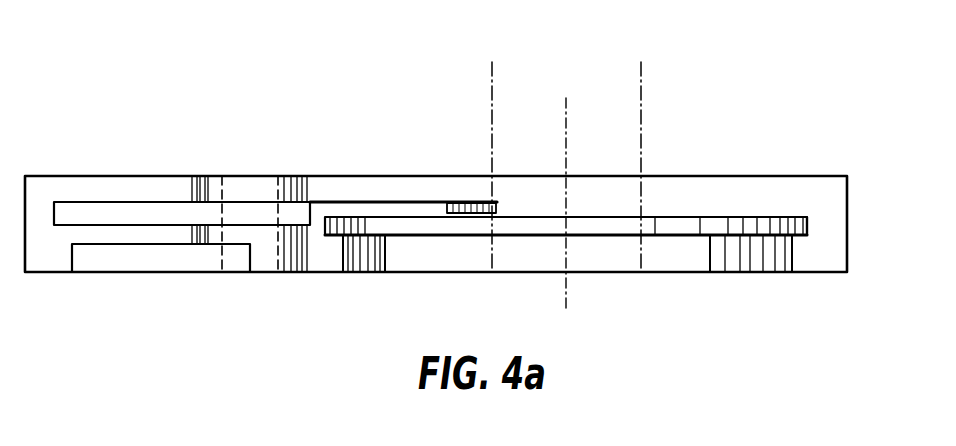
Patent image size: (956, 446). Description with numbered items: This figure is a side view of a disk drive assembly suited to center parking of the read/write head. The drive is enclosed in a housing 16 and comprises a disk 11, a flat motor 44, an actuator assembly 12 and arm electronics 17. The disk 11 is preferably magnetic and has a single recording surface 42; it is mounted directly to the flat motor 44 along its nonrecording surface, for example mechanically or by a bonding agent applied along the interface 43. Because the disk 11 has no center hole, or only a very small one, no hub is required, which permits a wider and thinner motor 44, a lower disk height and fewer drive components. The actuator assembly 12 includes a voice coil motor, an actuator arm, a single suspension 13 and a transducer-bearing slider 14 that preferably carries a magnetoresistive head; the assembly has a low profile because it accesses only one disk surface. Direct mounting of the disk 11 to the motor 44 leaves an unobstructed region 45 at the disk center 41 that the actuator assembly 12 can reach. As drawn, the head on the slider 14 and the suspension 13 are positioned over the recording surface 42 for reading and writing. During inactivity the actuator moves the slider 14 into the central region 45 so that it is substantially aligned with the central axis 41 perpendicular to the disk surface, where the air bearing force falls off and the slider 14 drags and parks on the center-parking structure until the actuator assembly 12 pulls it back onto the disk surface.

The disk 11 is at (808, 217).
The actuator assembly 12 is at (250, 157).
The suspension 13 is at (368, 201).
The transducer-bearing slider 14 is at (472, 203).
The housing 16 is at (793, 176).
The arm electronics 17 is at (162, 273).
The disk center 41 is at (566, 128).
The recording surface 42 is at (686, 217).
The interface 43 is at (746, 237).
The motor 44 is at (762, 274).
The unobstructed region 45 is at (641, 62).